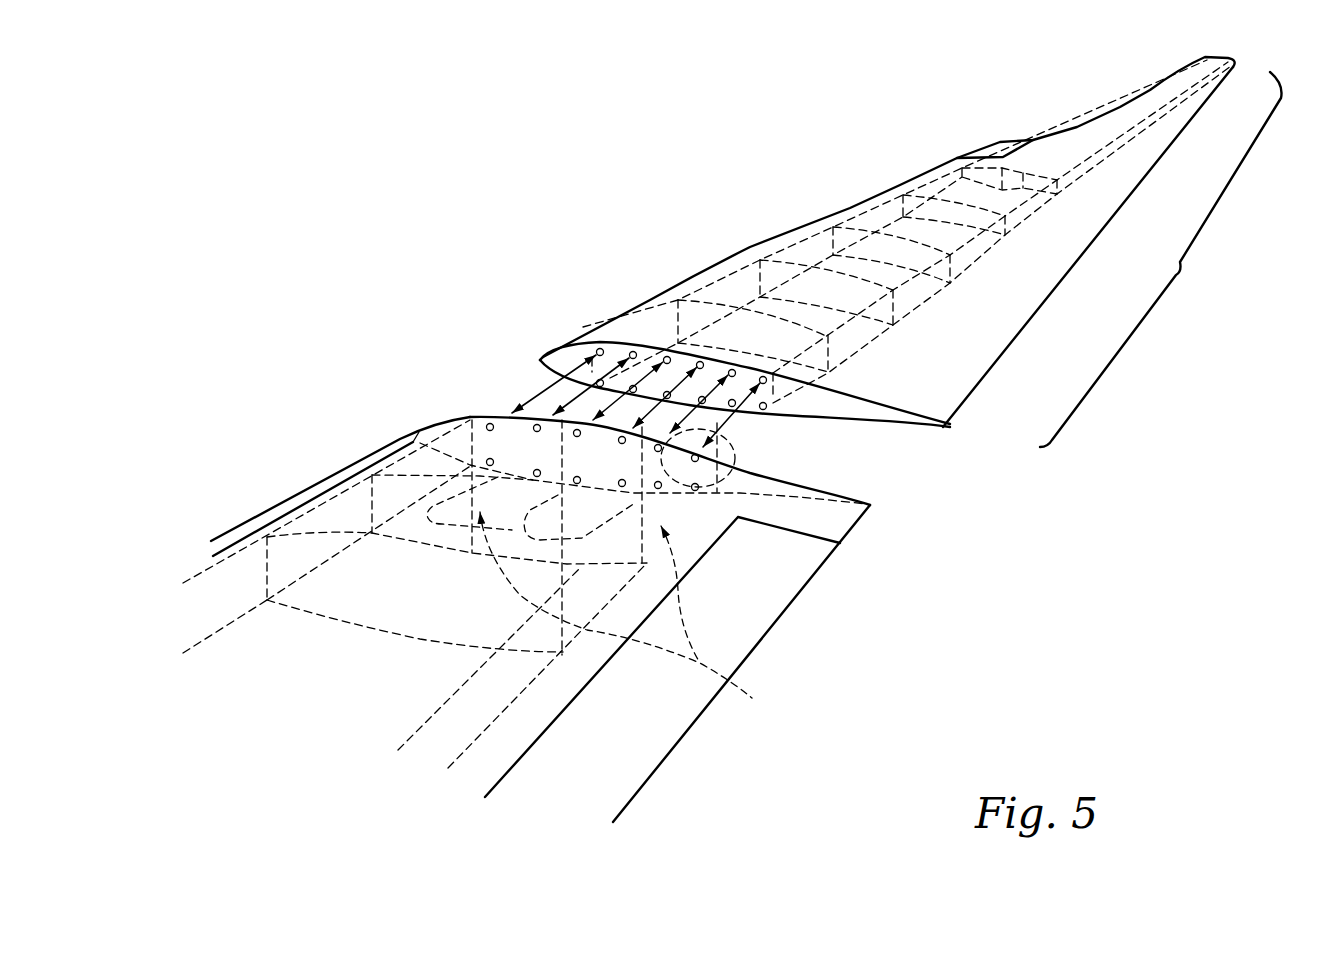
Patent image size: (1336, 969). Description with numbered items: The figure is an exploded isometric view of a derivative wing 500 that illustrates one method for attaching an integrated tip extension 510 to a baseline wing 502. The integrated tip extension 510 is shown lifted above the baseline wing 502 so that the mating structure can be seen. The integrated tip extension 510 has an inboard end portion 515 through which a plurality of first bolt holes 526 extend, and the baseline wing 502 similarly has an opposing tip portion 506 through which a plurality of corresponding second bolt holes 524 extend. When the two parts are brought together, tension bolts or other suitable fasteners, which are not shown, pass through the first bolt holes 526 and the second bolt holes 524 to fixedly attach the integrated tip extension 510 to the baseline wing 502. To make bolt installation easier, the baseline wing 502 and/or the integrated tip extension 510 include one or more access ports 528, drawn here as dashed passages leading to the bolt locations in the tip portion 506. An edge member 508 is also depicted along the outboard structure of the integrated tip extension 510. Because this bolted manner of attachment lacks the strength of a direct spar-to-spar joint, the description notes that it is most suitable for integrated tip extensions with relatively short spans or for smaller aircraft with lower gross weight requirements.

The derivative wing 500 is at (398, 235).
The baseline wing 502 is at (352, 698).
The tip portion 506 is at (755, 483).
The trailing edge member 508 is at (998, 331).
The integrated tip extension 510 is at (1176, 274).
The inboard end portion 515 is at (850, 406).
The second bolt holes 524 is at (735, 433).
The first bolt holes 526 is at (570, 386).
The access ports 528 is at (752, 698).